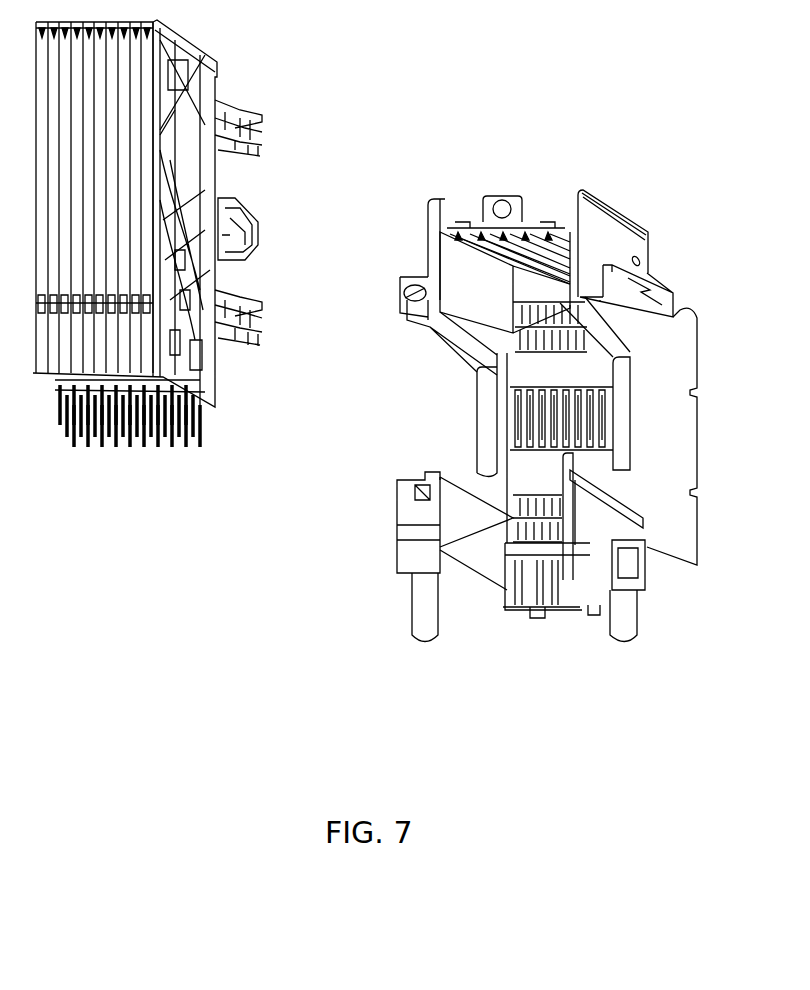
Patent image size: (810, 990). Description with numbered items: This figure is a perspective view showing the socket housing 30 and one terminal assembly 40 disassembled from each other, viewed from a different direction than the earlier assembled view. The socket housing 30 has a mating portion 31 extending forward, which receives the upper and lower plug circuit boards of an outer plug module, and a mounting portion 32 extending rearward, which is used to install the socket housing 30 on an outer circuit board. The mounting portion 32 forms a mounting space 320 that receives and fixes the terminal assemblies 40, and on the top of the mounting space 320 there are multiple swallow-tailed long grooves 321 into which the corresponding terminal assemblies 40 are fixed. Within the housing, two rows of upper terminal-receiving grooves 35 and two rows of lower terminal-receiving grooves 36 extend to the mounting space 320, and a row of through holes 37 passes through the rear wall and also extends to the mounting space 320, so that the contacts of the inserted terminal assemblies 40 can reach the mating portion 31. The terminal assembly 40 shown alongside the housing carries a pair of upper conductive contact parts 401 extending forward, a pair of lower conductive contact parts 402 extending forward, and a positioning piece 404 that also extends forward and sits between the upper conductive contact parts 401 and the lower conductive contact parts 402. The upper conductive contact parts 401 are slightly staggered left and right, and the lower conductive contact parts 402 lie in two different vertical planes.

The socket housing 30 is at (622, 216).
The mating portion 31 is at (688, 316).
The mounting portion 32 is at (581, 196).
The mounting space 320 is at (473, 275).
The swallow-tailed long grooves 321 is at (440, 222).
The upper terminal-receiving grooves 35 is at (535, 340).
The lower terminal-receiving grooves 36 is at (525, 512).
The through holes 37 is at (515, 425).
The terminal assembly 40 is at (182, 38).
The upper conductive contact parts 401 is at (258, 152).
The lower conductive contact parts 402 is at (258, 338).
The positioning piece 404 is at (258, 234).